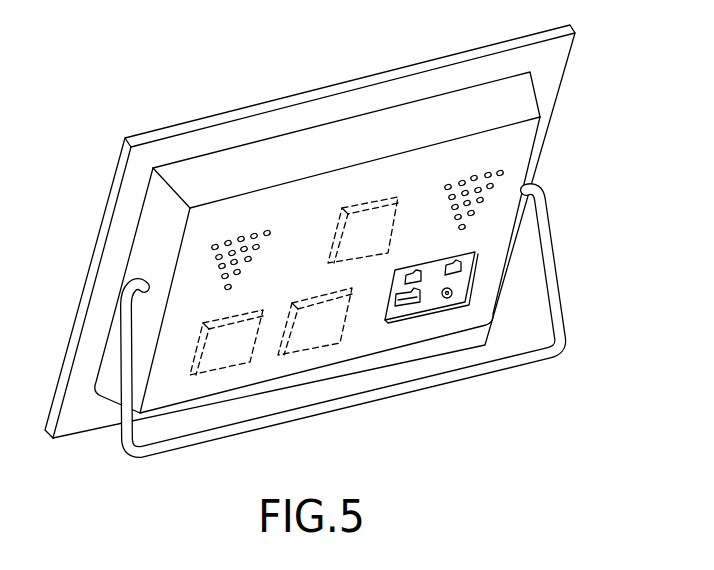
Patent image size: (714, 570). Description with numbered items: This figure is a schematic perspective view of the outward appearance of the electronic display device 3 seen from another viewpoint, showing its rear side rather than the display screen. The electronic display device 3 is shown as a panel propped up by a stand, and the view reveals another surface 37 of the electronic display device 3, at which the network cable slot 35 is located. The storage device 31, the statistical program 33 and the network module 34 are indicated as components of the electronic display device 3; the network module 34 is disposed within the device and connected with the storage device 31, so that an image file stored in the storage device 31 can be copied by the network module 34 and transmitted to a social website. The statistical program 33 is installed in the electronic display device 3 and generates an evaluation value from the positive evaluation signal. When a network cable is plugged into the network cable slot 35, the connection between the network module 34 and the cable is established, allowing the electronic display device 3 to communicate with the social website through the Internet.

The electronic display device 3 is at (204, 53).
The storage device 31 is at (347, 243).
The statistical program 33 is at (232, 347).
The network module 34 is at (322, 325).
The network cable slot 35 is at (430, 312).
The another surface 37 is at (480, 301).